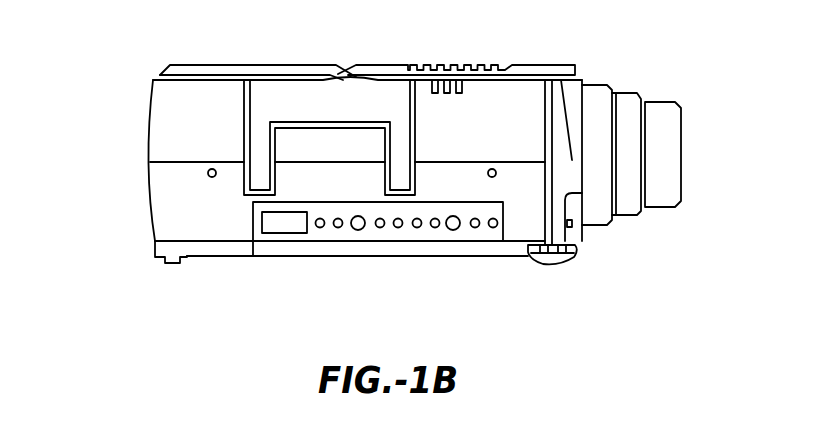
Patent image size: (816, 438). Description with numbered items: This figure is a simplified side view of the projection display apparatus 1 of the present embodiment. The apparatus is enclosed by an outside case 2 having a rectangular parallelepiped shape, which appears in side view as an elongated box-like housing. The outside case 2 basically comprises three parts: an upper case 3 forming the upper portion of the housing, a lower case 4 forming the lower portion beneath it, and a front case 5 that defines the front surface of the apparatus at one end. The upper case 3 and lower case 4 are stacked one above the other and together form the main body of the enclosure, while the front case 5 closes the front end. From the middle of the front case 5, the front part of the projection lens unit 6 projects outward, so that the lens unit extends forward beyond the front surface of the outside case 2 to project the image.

The projection display apparatus 1 is at (405, 161).
The outside case 2 is at (318, 164).
The upper case 3 is at (173, 138).
The lower case 4 is at (326, 216).
The front case 5 is at (563, 173).
The projection lens unit 6 is at (632, 217).